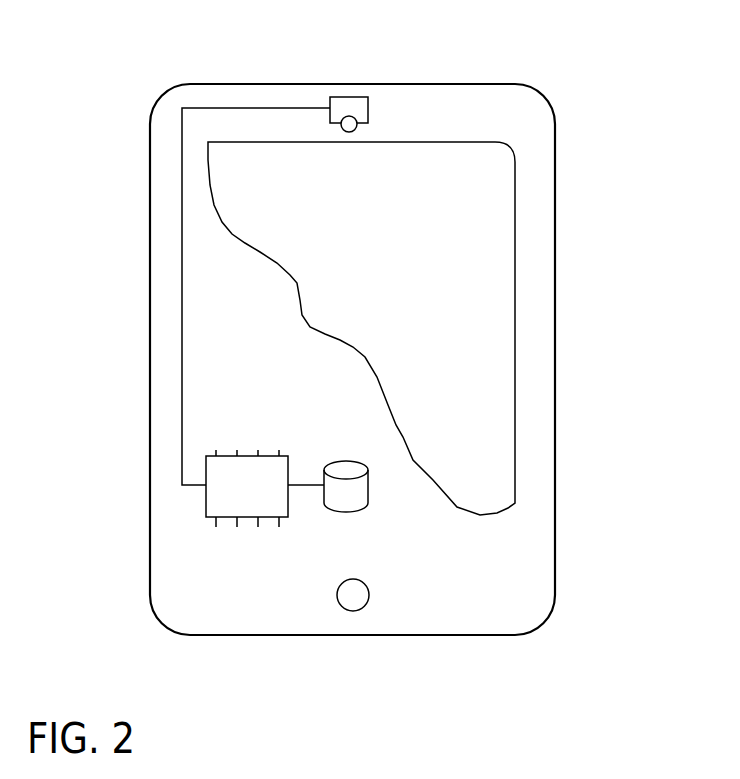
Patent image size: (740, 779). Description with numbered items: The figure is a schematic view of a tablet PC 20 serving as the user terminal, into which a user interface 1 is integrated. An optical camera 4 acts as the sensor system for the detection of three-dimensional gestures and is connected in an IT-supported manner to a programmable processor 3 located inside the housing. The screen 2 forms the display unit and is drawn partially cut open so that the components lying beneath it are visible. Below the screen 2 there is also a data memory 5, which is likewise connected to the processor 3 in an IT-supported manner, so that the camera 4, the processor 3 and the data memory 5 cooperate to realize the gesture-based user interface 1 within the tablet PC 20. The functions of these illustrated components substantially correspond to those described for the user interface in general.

The user interface 1 is at (126, 85).
The screen 2 is at (487, 316).
The programmable processor 3 is at (206, 495).
The optical camera 4 is at (350, 97).
The data memory 5 is at (343, 497).
The tablet PC 20 is at (556, 182).